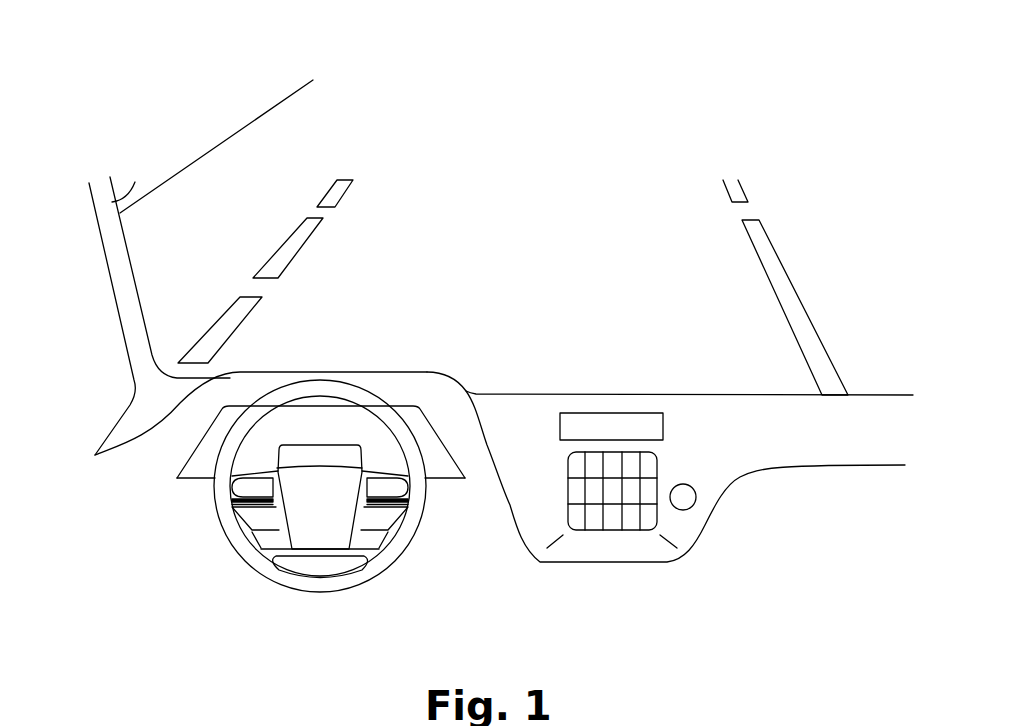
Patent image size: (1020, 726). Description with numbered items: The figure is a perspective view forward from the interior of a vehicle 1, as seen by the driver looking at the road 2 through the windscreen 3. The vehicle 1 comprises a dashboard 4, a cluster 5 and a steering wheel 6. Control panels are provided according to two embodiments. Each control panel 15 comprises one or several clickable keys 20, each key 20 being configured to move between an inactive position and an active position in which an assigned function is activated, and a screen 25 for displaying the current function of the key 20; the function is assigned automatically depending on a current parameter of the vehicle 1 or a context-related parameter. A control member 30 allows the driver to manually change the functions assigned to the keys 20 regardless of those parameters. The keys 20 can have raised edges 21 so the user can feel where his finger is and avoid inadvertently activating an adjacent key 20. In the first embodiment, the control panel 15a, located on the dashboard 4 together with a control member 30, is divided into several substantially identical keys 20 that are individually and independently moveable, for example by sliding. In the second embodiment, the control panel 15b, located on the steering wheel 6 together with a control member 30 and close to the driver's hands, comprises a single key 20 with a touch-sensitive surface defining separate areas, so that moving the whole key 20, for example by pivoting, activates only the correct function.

The vehicle 1 is at (203, 133).
The road 2 is at (663, 315).
The windscreen 3 is at (116, 200).
The dashboard 4 is at (753, 400).
The cluster 5 is at (233, 412).
The steering wheel 6 is at (358, 398).
The control panel 15 is at (404, 529).
The control panel 15a is at (632, 532).
The control panel 15b is at (232, 503).
The clickable key 20 is at (404, 482).
The raised edges 21 is at (583, 517).
The screen 25 is at (322, 428).
The control member 30 is at (232, 487).